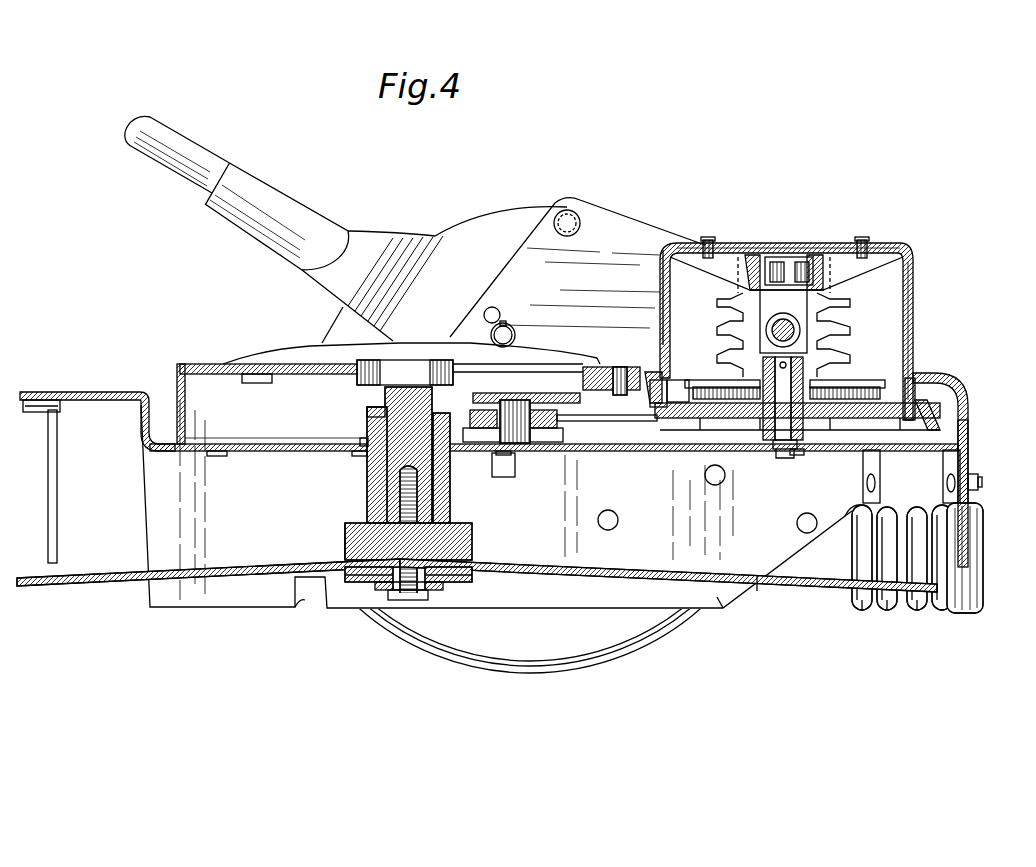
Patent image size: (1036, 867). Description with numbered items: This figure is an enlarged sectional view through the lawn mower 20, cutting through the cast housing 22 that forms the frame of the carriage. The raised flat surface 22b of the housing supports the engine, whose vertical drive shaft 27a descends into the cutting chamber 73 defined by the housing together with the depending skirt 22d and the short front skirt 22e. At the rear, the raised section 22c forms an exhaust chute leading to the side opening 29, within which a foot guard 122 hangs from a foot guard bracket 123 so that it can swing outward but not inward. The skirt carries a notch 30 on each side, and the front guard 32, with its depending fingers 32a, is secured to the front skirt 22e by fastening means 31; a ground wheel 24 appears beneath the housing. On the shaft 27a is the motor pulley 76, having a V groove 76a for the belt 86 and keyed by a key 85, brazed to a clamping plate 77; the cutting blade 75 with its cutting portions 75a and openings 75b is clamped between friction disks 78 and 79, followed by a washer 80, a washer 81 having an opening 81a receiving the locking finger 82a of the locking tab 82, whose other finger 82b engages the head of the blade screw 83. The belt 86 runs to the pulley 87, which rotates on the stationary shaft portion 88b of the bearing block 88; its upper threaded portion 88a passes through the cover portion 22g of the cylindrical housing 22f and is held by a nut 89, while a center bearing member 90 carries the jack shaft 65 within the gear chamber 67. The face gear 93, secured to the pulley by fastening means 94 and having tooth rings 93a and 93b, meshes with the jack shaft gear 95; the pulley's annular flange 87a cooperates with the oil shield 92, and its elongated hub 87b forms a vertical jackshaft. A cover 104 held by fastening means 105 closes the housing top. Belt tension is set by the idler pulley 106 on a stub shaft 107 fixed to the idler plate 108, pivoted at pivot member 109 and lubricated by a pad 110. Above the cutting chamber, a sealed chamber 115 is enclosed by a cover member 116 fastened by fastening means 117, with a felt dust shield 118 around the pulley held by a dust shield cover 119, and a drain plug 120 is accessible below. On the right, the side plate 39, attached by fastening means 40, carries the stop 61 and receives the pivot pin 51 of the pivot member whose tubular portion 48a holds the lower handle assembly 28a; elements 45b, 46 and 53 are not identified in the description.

The lawn mower 20 is at (253, 662).
The housing 22 is at (188, 350).
The raised flat surface 22b is at (213, 353).
The raised section 22c is at (73, 393).
The depending skirt 22d is at (717, 598).
The front depending skirt 22e is at (970, 455).
The cylindrical housing 22f is at (917, 277).
The cover portion 22g is at (730, 250).
The ground wheel 24 is at (497, 662).
The vertical drive shaft 27a is at (405, 400).
The lower handle assembly 28a is at (178, 140).
The exhaust opening 29 is at (110, 475).
The notch 30 is at (300, 607).
The fastening means 31 is at (982, 483).
The front guard 32 is at (977, 530).
The depending fingers 32a is at (947, 612).
The right-hand side plate 39 is at (620, 232).
The fastening means 40 is at (618, 518).
The grip band 45b is at (415, 233).
The handle body 46 is at (363, 233).
The tubular portion 48a is at (250, 178).
The pivot pin 51 is at (508, 326).
The pin hole 53 is at (493, 307).
The stop 61 is at (570, 208).
The jack shaft 65 is at (794, 332).
The gear chamber 67 is at (900, 270).
The cutting chamber 73 is at (320, 521).
The cutting blade 75 is at (102, 578).
The cutting portion 75a is at (812, 578).
The opening 75b is at (757, 592).
The motor pulley 76 is at (440, 467).
The V groove 76a is at (372, 410).
The clamping plate 77 is at (472, 542).
The friction disk 78 is at (345, 555).
The friction disk 79 is at (480, 570).
The washer 80 is at (472, 578).
The washer 81 is at (460, 582).
The opening 81a is at (373, 582).
The locking tab 82 is at (422, 592).
The locking finger 82a is at (380, 590).
The finger 82b is at (436, 592).
The blade screw 83 is at (397, 600).
The key 85 is at (425, 494).
The belt 86 is at (367, 420).
The pulley 87 is at (927, 392).
The annular flange 87a is at (913, 393).
The elongated hub 87b is at (830, 365).
The bearing block 88 is at (807, 303).
The upper threaded portion 88a is at (783, 320).
The stationary shaft portion 88b is at (800, 455).
The nut 89 is at (802, 255).
The center bearing member 90 is at (800, 327).
The oil shield 92 is at (680, 385).
The face gear 93 is at (670, 448).
The gear teeth 93a is at (697, 388).
The gear teeth 93b is at (837, 393).
The fastening means 94 is at (745, 427).
The jack shaft gear 95 is at (730, 297).
The cover 104 is at (850, 243).
The fastening means 105 is at (707, 238).
The idler pulley 106 is at (560, 420).
The stub shaft 107 is at (520, 447).
The idler plate 108 is at (540, 366).
The pivot member 109 is at (617, 367).
The lubricating pad 110 is at (477, 404).
The sealed chamber 115 is at (177, 377).
The cover member 116 is at (273, 442).
The fastening means 117 is at (217, 456).
The felt dust shield 118 is at (362, 440).
The dust shield cover 119 is at (352, 455).
The drain plug 120 is at (505, 477).
The foot guard 122 is at (57, 443).
The foot guard bracket 123 is at (55, 415).